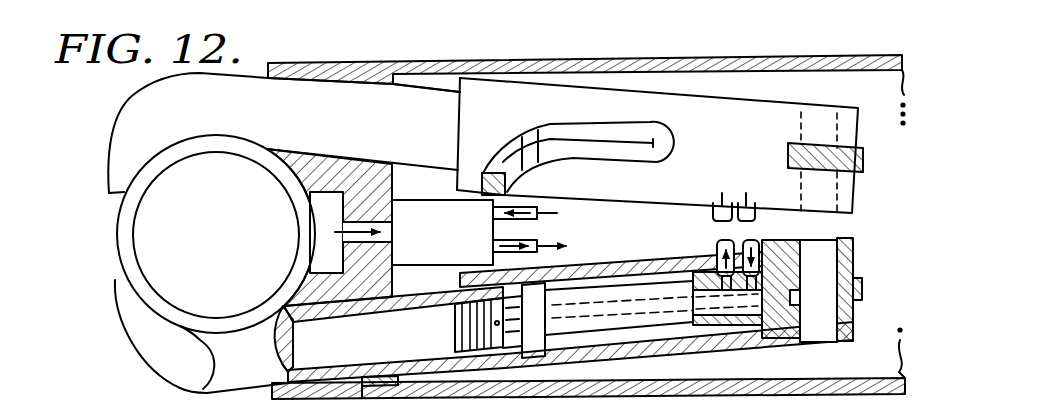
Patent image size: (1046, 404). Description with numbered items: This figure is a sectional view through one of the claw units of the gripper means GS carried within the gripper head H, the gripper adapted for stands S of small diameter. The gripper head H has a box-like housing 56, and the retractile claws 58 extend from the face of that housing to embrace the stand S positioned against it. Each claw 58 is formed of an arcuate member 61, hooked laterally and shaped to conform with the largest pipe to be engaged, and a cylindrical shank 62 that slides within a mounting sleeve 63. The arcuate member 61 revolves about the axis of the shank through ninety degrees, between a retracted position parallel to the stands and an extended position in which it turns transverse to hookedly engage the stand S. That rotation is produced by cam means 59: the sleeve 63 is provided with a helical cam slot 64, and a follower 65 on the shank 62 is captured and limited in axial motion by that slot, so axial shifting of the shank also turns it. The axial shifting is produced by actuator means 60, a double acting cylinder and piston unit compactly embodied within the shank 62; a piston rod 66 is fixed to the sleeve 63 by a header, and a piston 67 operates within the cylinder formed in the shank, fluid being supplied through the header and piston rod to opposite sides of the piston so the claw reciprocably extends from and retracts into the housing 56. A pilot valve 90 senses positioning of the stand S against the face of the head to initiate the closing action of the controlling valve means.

The gripper head H is at (760, 52).
The box-like housing 56 is at (642, 60).
The gripper means for small diameter stands GS is at (92, 105).
The cylindrical shank 62 is at (560, 238).
The retractile claws 58 is at (150, 127).
The stand S is at (110, 245).
The arcuate member 61 is at (204, 128).
The mounting sleeve 63 is at (660, 145).
The helical cam slot 64 is at (582, 124).
The follower 65 is at (496, 173).
The cam means 59 is at (460, 190).
The pilot valve 90 is at (479, 232).
The actuator means 60 is at (655, 166).
The piston rod 66 is at (574, 340).
The piston 67 is at (455, 322).